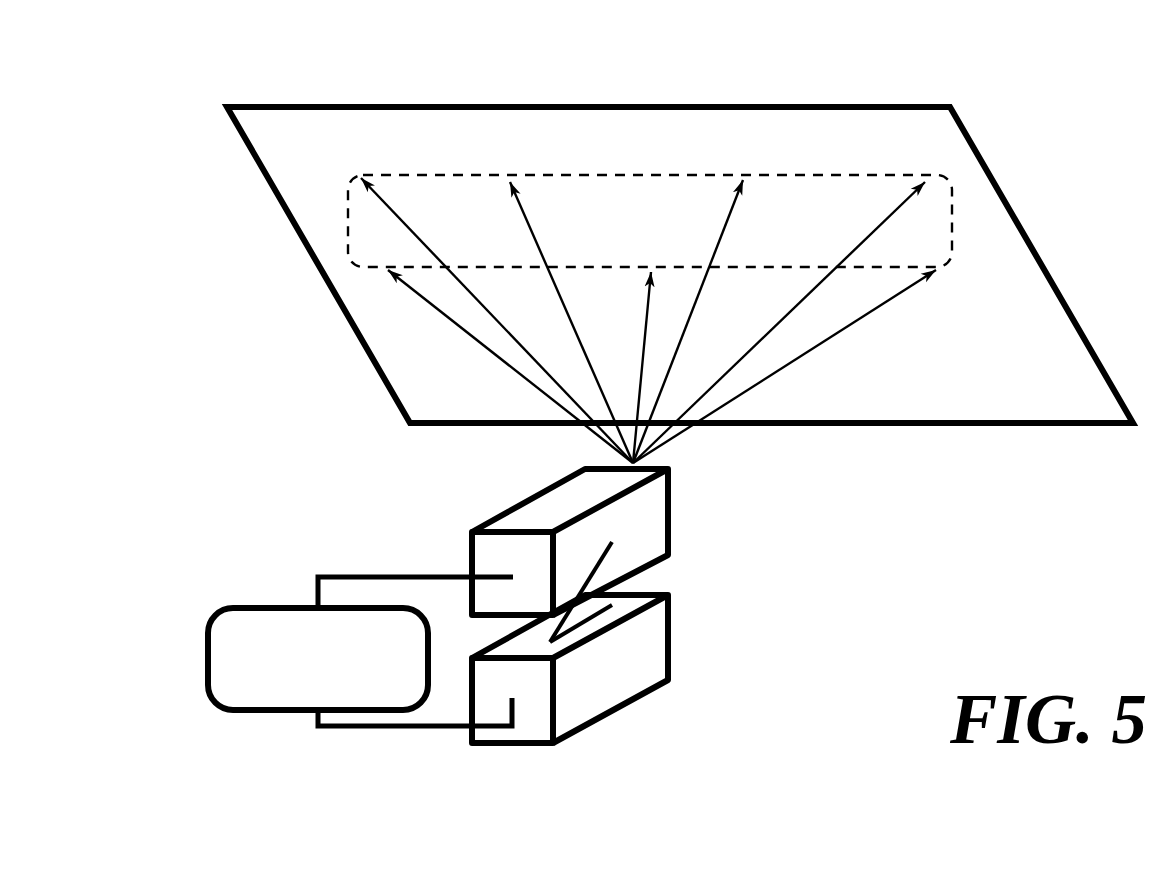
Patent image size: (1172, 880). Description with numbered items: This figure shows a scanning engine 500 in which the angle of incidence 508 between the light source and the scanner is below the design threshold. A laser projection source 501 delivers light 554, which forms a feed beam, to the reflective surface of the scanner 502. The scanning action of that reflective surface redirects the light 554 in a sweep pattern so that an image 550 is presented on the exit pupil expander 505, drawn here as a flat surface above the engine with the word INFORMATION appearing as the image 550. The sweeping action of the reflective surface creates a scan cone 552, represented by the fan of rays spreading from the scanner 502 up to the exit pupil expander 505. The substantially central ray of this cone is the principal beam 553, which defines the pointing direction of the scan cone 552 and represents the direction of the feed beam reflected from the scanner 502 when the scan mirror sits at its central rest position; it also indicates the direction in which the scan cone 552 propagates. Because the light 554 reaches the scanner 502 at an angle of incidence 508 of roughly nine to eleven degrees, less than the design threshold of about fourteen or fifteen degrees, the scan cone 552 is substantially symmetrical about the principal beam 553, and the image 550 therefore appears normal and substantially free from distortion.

The scanning engine 500 is at (559, 612).
The laser projection source 501 is at (605, 658).
The scanner 502 is at (555, 508).
The exit pupil expander 505 is at (317, 226).
The angle of incidence 508 is at (597, 560).
The image 550 is at (545, 193).
The scan cone 552 is at (876, 322).
The principal beam 553 is at (642, 350).
The light 554 is at (648, 572).